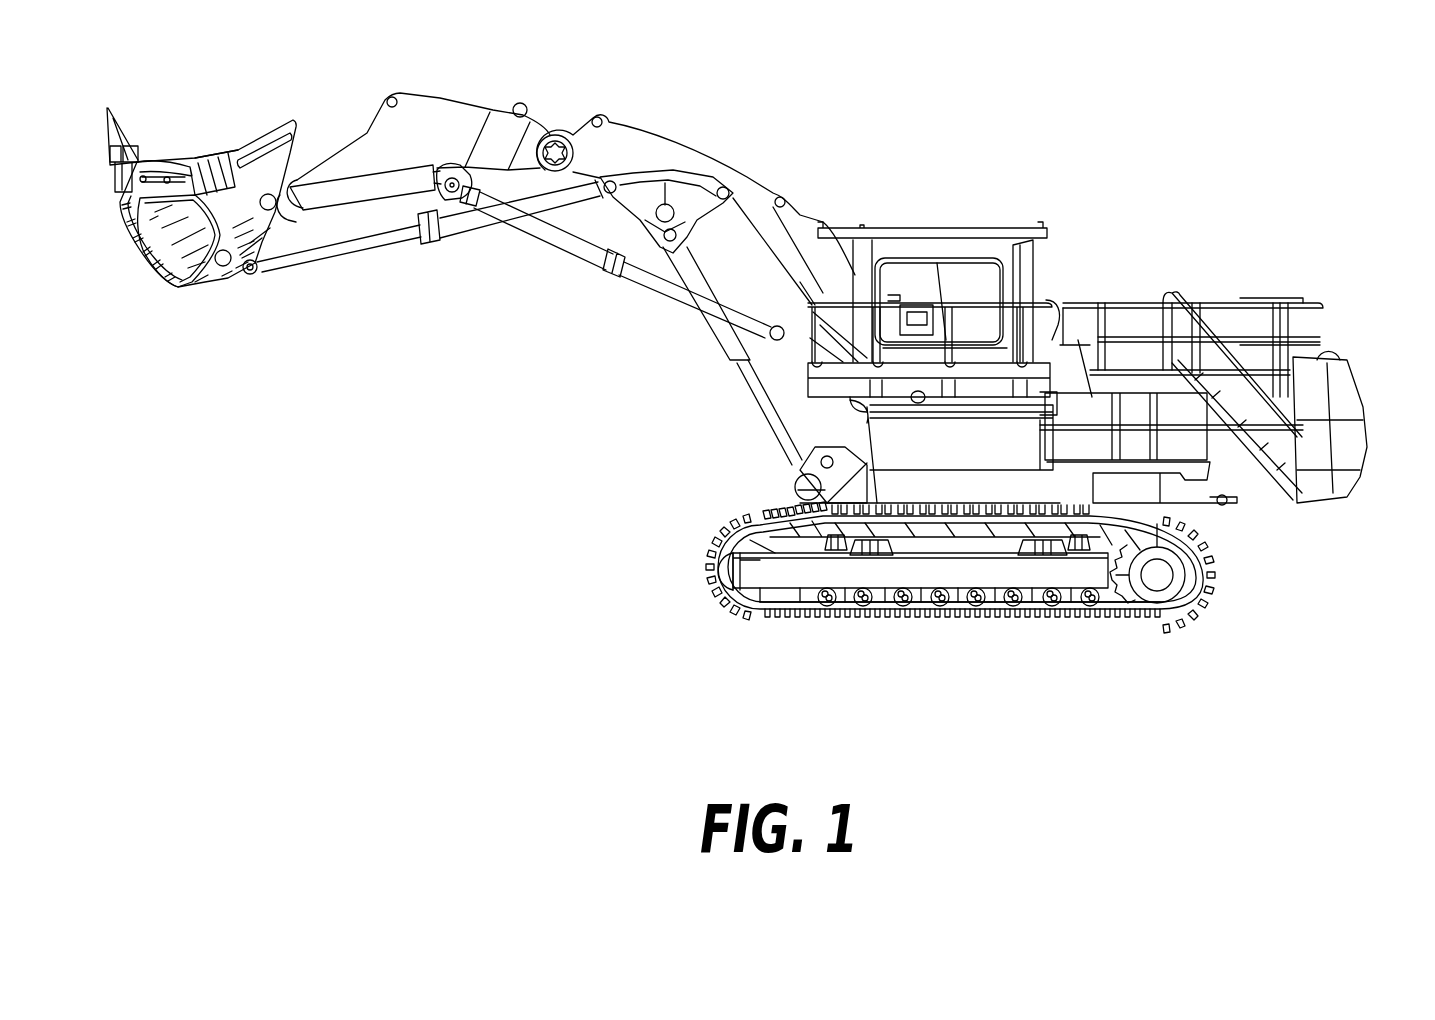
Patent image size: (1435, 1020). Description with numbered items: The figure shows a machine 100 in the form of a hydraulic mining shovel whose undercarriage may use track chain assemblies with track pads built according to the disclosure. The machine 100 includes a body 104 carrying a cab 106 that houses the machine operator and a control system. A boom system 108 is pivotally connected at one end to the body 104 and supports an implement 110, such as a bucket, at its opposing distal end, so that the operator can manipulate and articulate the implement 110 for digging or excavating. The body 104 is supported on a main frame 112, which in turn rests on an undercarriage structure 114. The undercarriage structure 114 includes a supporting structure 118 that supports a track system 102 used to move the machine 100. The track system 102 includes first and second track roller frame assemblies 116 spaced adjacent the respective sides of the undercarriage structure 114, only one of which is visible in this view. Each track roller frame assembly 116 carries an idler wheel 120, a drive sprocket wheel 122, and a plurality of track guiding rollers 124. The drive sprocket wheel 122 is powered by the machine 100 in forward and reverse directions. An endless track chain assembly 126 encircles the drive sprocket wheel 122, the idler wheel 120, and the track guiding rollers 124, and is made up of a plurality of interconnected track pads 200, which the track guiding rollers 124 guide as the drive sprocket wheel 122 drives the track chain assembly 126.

The machine 100 is at (895, 206).
The track system 102 is at (1215, 577).
The body 104 is at (893, 438).
The cab 106 is at (980, 280).
The boom system 108 is at (615, 113).
The implement 110 is at (178, 287).
The main frame 112 is at (1167, 485).
The undercarriage structure 114 is at (945, 540).
The track roller frame assembly 116 is at (706, 568).
The supporting structure 118 is at (1083, 565).
The idler wheel 120 is at (728, 577).
The drive sprocket wheel 122 is at (1133, 600).
The track guiding rollers 124 is at (907, 600).
The track chain assembly 126 is at (745, 620).
The track pads 200 is at (722, 545).